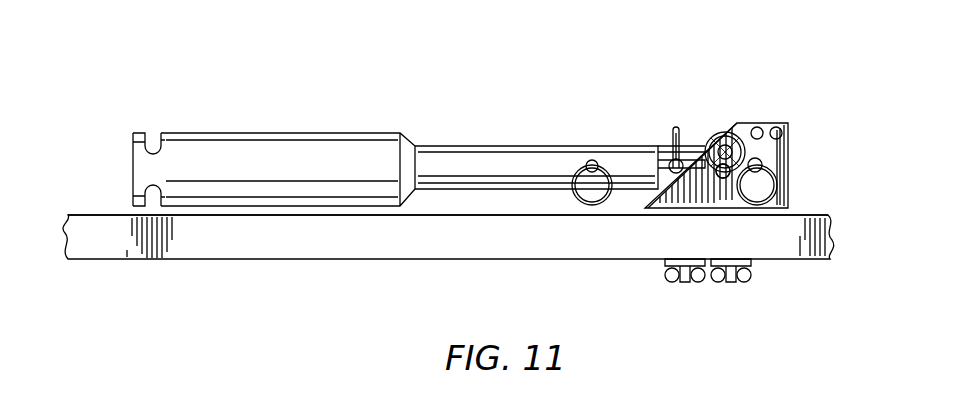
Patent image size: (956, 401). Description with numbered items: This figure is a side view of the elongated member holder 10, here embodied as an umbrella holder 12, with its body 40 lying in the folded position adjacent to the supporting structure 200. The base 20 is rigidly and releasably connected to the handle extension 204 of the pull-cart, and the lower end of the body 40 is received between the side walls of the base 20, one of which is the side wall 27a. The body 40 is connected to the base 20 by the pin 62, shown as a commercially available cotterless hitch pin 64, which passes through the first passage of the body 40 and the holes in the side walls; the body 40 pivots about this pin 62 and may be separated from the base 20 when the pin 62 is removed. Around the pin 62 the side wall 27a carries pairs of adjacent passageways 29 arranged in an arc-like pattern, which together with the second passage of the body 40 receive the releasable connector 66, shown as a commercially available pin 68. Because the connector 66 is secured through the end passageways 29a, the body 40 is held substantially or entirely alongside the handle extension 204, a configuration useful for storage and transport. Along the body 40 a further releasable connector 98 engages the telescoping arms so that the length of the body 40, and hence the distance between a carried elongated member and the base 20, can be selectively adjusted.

The elongated member holder 10 is at (395, 120).
The umbrella holder 12 is at (222, 118).
The body 40 is at (300, 133).
The releasable connector 98 is at (587, 168).
The side wall 27a is at (657, 180).
The releasable connector 66 is at (716, 164).
The pin 68 is at (726, 131).
The passageways 29 is at (776, 127).
The end passageways 29a is at (718, 180).
The cotterless hitch pin 64 is at (760, 158).
The pin 62 is at (766, 160).
The base 20 is at (789, 192).
The supporting structure 200 is at (210, 264).
The handle extension 204 is at (322, 245).